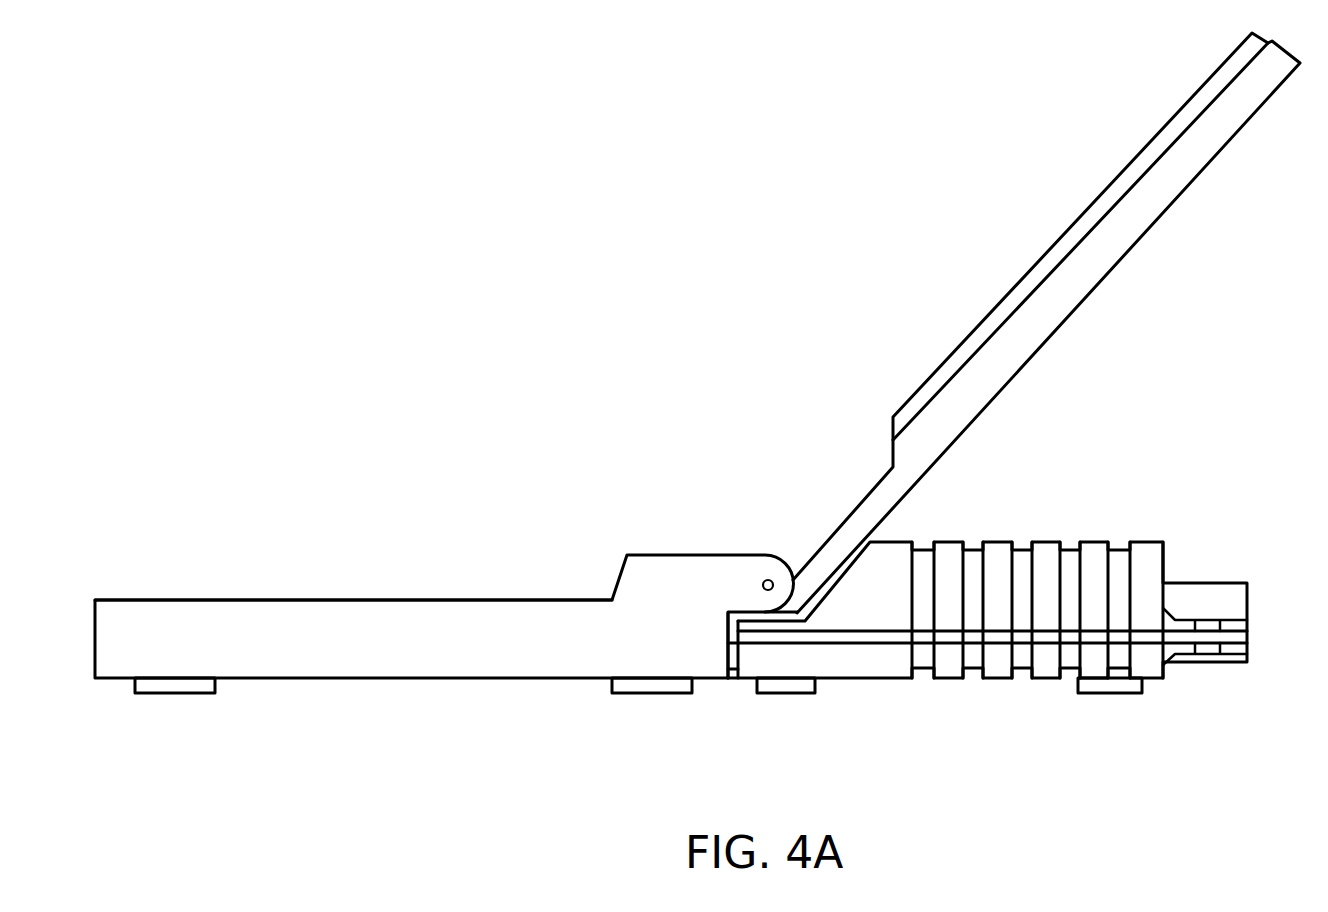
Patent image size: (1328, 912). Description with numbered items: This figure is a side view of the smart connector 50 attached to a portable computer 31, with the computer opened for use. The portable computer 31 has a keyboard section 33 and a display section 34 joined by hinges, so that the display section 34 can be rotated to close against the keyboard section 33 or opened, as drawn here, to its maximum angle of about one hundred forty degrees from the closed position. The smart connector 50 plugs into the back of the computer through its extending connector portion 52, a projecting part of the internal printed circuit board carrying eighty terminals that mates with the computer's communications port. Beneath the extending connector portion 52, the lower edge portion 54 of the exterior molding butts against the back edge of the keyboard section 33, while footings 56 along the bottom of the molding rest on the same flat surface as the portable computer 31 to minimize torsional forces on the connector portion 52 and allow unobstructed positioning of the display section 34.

The portable computer 31 is at (417, 528).
The keyboard section 33 is at (240, 600).
The display section 34 is at (1028, 272).
The smart connector 50 is at (1043, 492).
The extending connector portion 52 is at (728, 654).
The lower edge portion 54 is at (735, 680).
The footings 56 is at (790, 694).